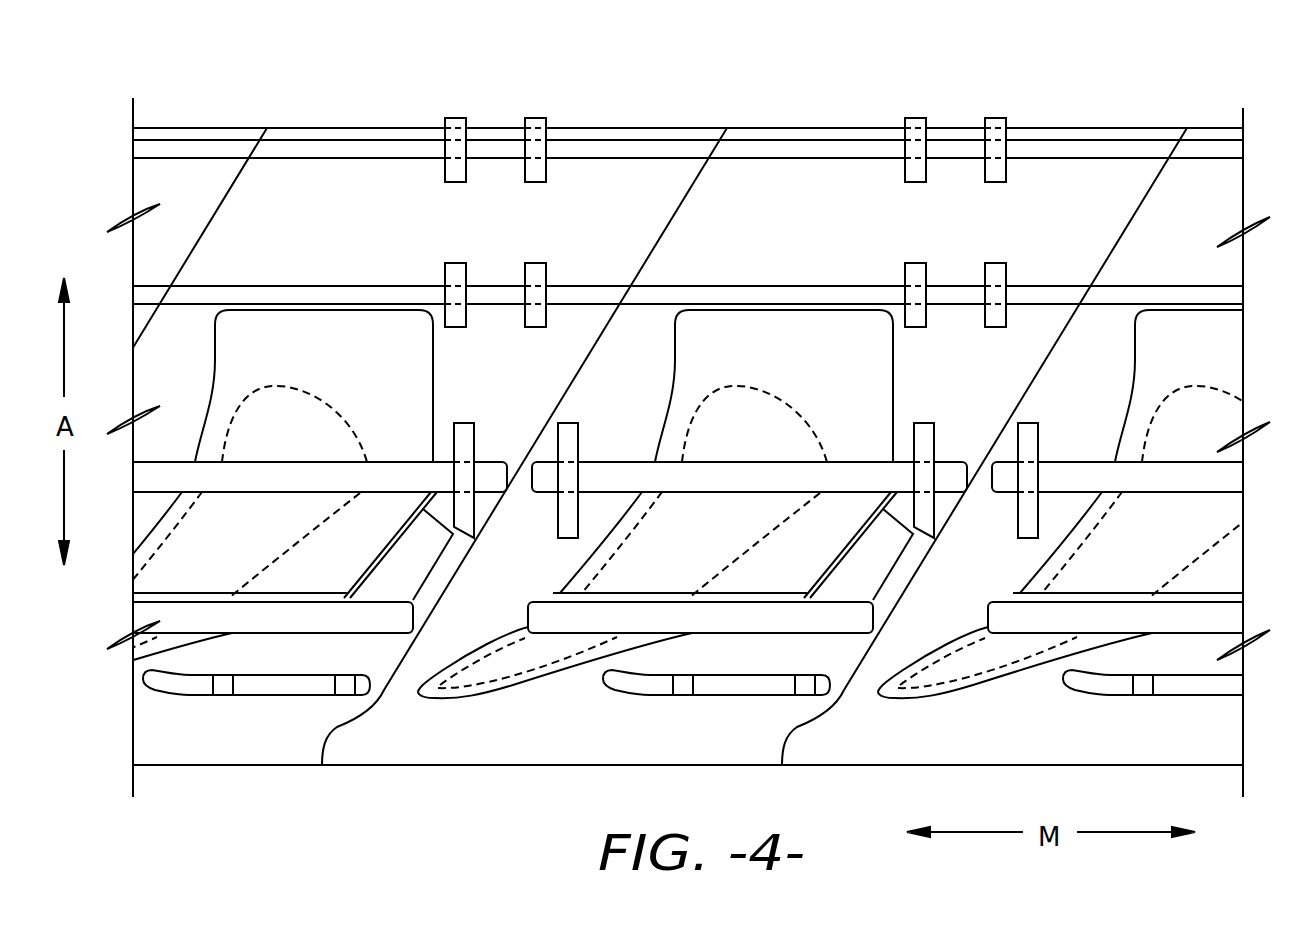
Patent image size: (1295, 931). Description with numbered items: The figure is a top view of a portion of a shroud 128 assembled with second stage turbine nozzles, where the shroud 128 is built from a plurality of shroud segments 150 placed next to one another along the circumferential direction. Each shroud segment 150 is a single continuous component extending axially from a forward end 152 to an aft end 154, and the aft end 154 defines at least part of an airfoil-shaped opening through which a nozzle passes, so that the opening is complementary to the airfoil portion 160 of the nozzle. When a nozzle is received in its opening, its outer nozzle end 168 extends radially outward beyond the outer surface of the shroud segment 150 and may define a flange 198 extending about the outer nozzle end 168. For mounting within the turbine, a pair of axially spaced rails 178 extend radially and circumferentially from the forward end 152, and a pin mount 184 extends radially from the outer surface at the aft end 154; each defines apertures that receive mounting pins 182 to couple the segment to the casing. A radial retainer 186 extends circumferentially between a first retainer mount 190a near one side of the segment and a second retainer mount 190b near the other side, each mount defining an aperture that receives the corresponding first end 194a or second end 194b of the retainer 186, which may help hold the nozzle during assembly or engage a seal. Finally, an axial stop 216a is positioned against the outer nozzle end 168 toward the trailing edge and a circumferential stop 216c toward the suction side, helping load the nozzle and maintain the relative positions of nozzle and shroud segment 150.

The shroud 128 is at (215, 105).
The shroud segment 150 is at (340, 182).
The forward end 152 is at (1043, 128).
The aft end 154 is at (920, 773).
The airfoil portion 160 is at (293, 412).
The outer nozzle end 168 is at (268, 327).
The rail 178 is at (640, 153).
The mounting pin 182 is at (533, 119).
The pin mount 184 is at (272, 688).
The radial retainer 186 is at (340, 478).
The first retainer mount 190a is at (568, 440).
The second retainer mount 190b is at (926, 431).
The first end 194a is at (521, 470).
The second end 194b is at (965, 477).
The flange 198 is at (675, 382).
The axial stop 216a is at (333, 625).
The circumferential stop 216c is at (385, 581).